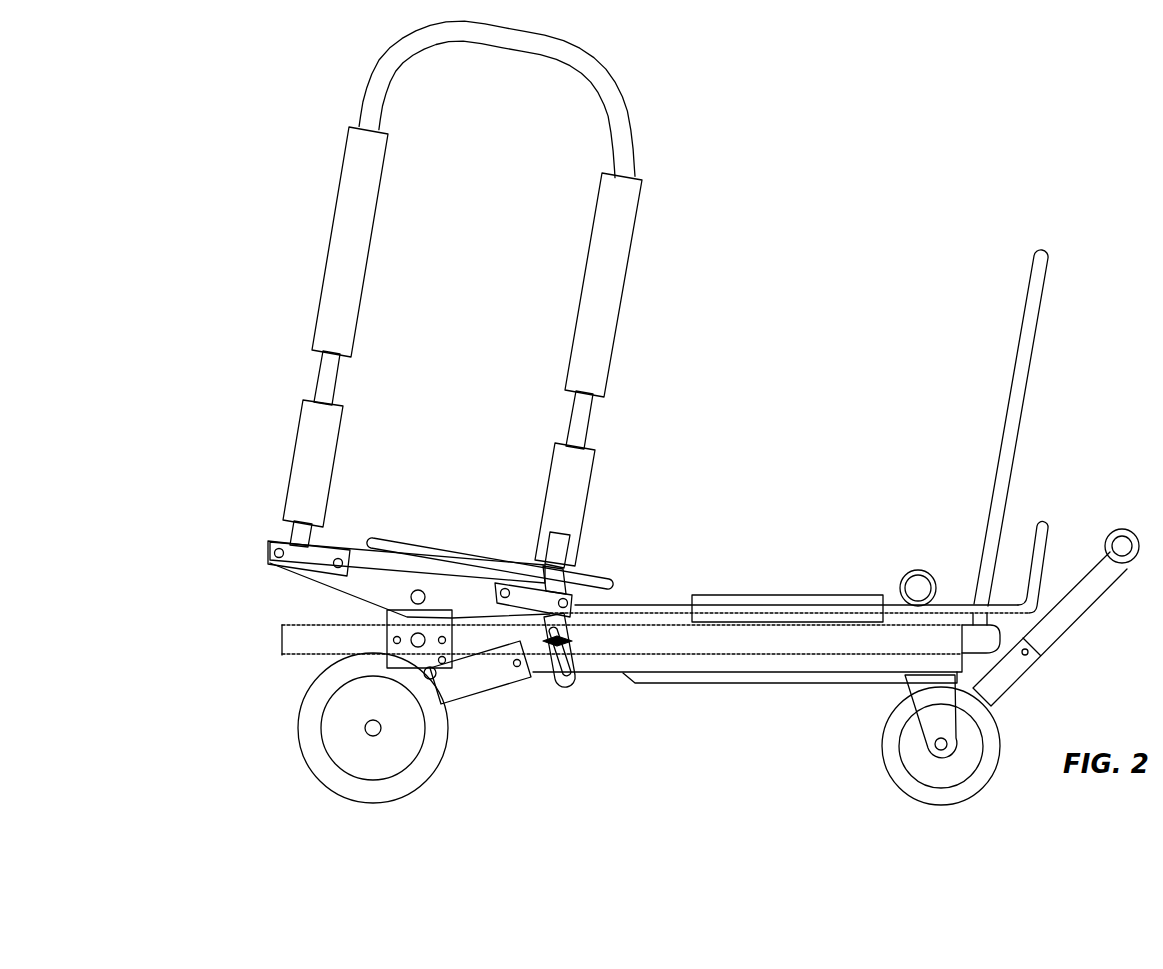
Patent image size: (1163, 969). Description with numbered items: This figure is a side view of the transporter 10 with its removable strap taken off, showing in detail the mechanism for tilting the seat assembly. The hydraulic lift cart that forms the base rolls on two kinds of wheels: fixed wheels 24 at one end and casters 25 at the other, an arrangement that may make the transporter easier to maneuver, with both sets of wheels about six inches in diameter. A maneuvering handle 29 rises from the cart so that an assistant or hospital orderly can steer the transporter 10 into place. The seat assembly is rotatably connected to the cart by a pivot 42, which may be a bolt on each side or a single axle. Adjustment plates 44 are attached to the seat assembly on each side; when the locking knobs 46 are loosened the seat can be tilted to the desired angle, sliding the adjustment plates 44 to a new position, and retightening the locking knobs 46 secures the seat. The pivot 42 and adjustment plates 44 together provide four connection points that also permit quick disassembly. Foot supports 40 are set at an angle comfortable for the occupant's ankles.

The transporter 10 is at (673, 413).
The fixed wheels 24 is at (284, 760).
The casters 25 is at (869, 775).
The maneuvering handle 29 is at (1056, 239).
The foot supports 40 is at (1052, 504).
The pivot 42 is at (396, 601).
The adjustment plates 44 is at (585, 686).
The locking knobs 46 is at (576, 623).